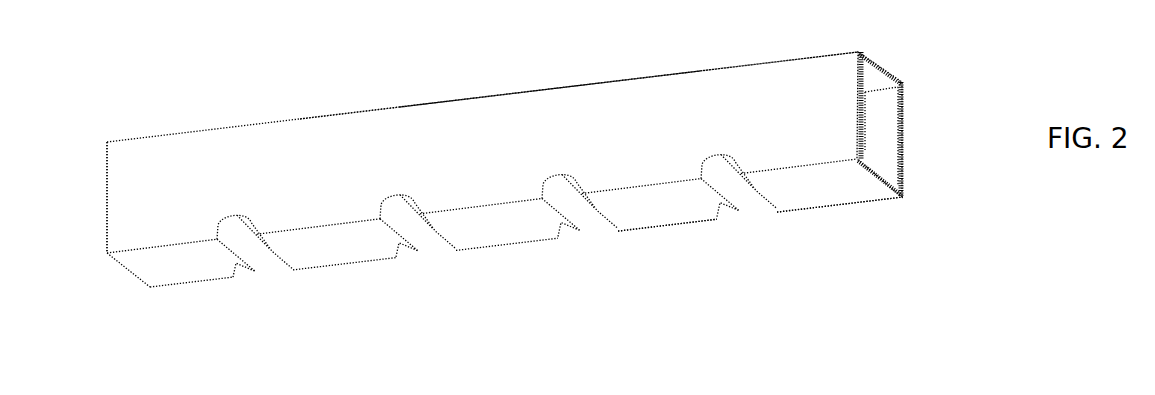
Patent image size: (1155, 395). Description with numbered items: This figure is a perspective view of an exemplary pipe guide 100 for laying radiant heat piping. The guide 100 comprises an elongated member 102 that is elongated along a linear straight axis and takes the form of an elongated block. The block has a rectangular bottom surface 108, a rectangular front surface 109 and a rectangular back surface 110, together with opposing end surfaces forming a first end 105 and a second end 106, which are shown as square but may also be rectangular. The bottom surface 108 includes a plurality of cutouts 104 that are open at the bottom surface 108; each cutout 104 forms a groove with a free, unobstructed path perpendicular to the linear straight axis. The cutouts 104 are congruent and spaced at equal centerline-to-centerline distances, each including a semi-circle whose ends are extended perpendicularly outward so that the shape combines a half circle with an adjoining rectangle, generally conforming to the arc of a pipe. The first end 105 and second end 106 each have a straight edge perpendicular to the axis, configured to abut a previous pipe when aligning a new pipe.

The pipe guide 100 is at (315, 92).
The elongated member 102 is at (772, 70).
The cutouts 104 is at (243, 245).
The first end 105 is at (107, 185).
The second end 106 is at (902, 127).
The bottom surface 108 is at (825, 190).
The front surface 109 is at (498, 120).
The back surface 110 is at (880, 155).